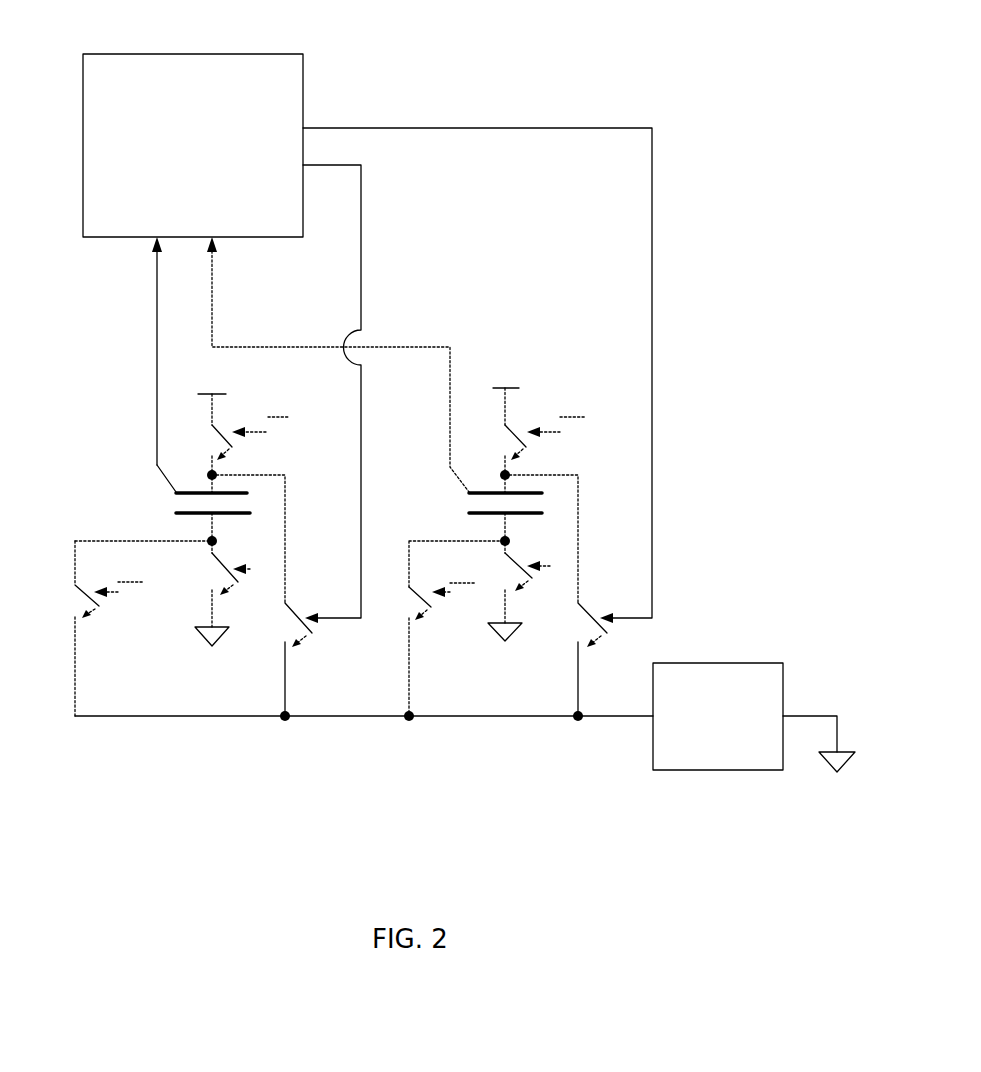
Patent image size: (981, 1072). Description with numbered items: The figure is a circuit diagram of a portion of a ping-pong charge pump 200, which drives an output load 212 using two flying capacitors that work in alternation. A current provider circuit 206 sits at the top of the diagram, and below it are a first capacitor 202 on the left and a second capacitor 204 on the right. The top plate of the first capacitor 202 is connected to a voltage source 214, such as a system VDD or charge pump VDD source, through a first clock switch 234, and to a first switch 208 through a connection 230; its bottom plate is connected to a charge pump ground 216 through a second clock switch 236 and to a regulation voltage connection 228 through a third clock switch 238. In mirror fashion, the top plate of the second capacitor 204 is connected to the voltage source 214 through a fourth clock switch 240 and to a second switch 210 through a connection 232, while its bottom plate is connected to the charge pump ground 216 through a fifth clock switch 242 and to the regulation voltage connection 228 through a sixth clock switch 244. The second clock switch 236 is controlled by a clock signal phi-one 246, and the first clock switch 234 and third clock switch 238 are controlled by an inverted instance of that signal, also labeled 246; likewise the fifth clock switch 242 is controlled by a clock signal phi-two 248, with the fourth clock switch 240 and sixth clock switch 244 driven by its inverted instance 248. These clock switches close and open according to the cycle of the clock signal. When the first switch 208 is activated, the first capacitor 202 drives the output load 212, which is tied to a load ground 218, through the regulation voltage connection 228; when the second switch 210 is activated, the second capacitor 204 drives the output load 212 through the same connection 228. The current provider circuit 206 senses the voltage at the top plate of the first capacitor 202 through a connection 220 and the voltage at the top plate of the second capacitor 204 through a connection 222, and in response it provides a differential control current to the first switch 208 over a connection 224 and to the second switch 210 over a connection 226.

The ping-pong charge pump 200 is at (200, 874).
The first flying capacitor 202 is at (176, 496).
The second flying capacitor 204 is at (469, 496).
The current provider circuit 206 is at (118, 238).
The first switch 208 is at (284, 628).
The second switch 210 is at (578, 636).
The output load 212 is at (653, 753).
The voltage source 214 is at (212, 394).
The charge pump ground 216 is at (206, 650).
The load ground 218 is at (833, 772).
The connection 220 is at (157, 330).
The connection 222 is at (418, 347).
The connection 224 is at (361, 248).
The connection 226 is at (443, 128).
The regulation voltage connection 228 is at (458, 717).
The connection 230 is at (285, 547).
The connection 232 is at (578, 557).
The first clock switch 234 is at (210, 440).
The second clock switch 236 is at (212, 575).
The third clock switch 238 is at (80, 598).
The fourth clock switch 240 is at (503, 440).
The fifth clock switch 242 is at (513, 572).
The sixth clock switch 244 is at (405, 598).
The clock signal phi-one 246 is at (292, 427).
The clock signal phi-two 248 is at (583, 428).